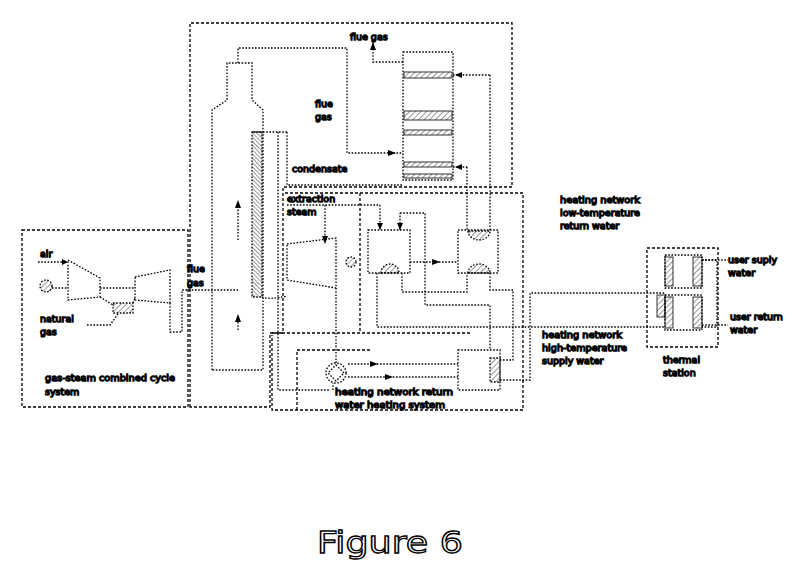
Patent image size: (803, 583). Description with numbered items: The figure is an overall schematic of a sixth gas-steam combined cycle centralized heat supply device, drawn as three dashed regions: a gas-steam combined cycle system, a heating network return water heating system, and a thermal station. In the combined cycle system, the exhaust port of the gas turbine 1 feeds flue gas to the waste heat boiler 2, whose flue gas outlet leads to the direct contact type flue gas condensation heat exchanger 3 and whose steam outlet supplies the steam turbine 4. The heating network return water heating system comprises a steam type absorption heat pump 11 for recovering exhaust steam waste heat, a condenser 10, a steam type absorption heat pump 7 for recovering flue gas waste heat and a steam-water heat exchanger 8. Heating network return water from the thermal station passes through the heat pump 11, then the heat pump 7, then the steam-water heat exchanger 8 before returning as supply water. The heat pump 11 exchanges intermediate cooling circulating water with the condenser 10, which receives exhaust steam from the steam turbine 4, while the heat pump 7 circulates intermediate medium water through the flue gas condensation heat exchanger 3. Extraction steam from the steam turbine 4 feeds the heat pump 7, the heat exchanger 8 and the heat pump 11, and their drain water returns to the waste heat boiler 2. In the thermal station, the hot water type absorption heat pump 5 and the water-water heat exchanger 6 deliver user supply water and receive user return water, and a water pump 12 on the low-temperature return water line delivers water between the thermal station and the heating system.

The gas turbine 1 is at (132, 296).
The waste heat boiler 2 is at (249, 216).
The direct contact type flue gas condensation heat exchanger 3 is at (428, 116).
The steam turbine 4 is at (321, 263).
The hot water type absorption heat pump 5 is at (679, 312).
The water-water heat exchanger 6 is at (683, 271).
The steam type absorption heat pump for recovering flue gas waste heat 7 is at (478, 251).
The steam-water heat exchanger 8 is at (389, 251).
The condenser 10 is at (331, 381).
The steam type absorption heat pump for recovering exhaust steam waste heat 11 is at (479, 370).
The water pump 12 is at (590, 291).